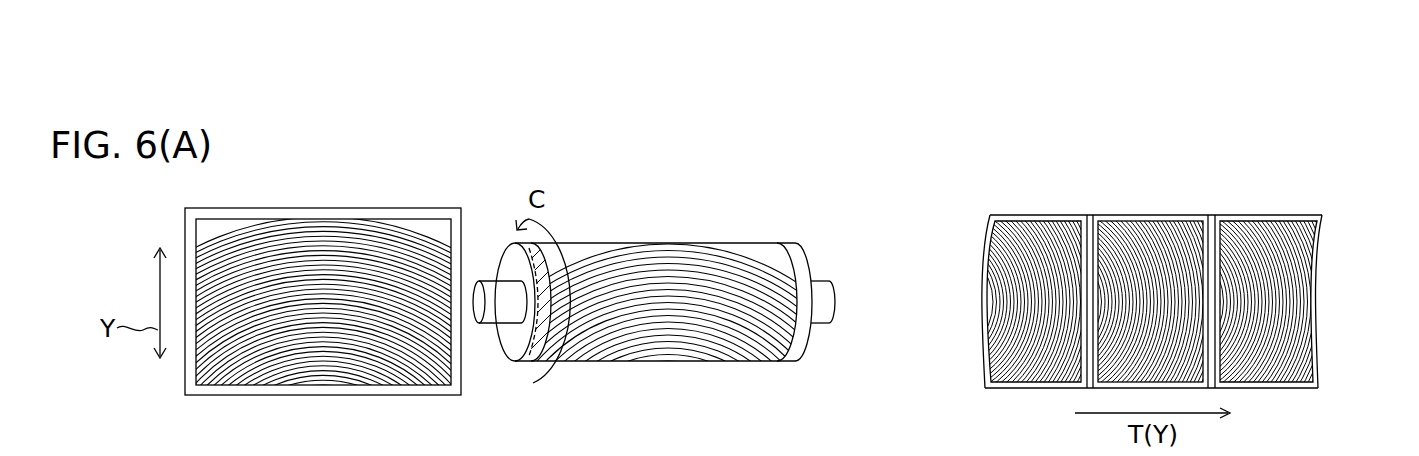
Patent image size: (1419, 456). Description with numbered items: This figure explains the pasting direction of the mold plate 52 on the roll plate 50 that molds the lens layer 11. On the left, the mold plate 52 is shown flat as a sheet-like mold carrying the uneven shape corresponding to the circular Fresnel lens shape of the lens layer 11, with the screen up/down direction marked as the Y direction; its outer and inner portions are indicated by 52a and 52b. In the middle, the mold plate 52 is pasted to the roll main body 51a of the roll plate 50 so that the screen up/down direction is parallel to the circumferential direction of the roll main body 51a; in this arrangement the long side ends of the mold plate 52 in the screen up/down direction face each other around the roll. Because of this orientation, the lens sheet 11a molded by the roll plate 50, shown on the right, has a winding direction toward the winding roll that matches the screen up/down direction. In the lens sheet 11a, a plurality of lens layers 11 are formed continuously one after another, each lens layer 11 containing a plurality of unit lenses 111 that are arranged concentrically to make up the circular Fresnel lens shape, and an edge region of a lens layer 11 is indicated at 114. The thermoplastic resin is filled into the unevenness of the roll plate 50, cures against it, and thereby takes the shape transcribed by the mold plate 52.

The lens layer 11 is at (1063, 286).
The lens sheet 11a is at (1147, 210).
The unit lens 111 is at (1230, 223).
The edge portion of web section 114 is at (1268, 210).
The roll plate 50 is at (765, 192).
The roll main body 51a is at (797, 243).
The mold plate 52 is at (345, 208).
The outer layer of sheet member 52a is at (262, 394).
The inner layer of sheet member 52b is at (417, 376).